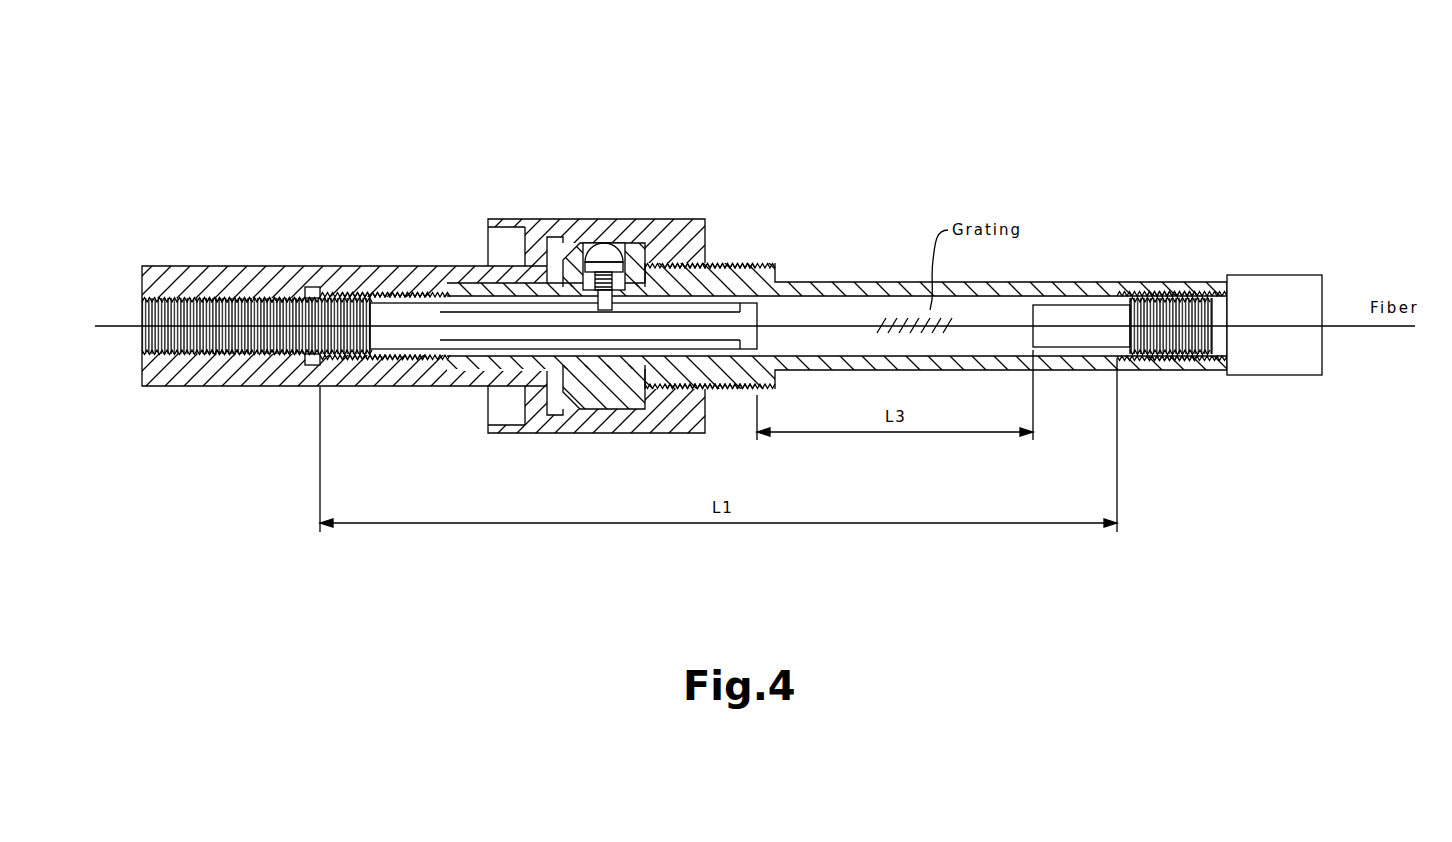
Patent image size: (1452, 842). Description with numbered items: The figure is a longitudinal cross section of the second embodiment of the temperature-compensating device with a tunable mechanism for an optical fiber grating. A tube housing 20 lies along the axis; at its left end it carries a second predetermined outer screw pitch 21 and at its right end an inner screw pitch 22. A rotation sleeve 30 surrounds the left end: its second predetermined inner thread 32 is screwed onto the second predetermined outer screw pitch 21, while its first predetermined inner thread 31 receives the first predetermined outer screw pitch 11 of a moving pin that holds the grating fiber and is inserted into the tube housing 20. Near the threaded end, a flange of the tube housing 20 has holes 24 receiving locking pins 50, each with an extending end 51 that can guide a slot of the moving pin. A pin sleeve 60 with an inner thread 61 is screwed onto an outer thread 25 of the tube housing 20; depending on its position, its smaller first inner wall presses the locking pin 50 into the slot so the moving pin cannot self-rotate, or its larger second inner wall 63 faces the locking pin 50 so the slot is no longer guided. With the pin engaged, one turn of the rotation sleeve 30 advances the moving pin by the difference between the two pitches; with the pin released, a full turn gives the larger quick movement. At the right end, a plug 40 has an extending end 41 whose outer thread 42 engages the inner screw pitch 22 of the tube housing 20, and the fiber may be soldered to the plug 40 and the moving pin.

The first predetermined outer screw pitch 11 is at (195, 360).
The tube housing 20 is at (855, 290).
The second predetermined outer screw pitch 21 is at (398, 266).
The inner screw pitch 22 is at (1180, 360).
The hole 24 is at (650, 235).
The outer thread 25 is at (757, 263).
The rotation sleeve 30 is at (238, 266).
The first predetermined inner thread 31 is at (270, 360).
The second predetermined inner thread 32 is at (370, 356).
The plug 40 is at (1272, 287).
The extending end 41 is at (1045, 335).
The outer thread 42 is at (1176, 298).
The locking pin 50 is at (628, 240).
The extending end 51 is at (578, 235).
The pin sleeve 60 is at (668, 240).
The inner thread 61 is at (712, 265).
The second inner wall 63 is at (473, 307).